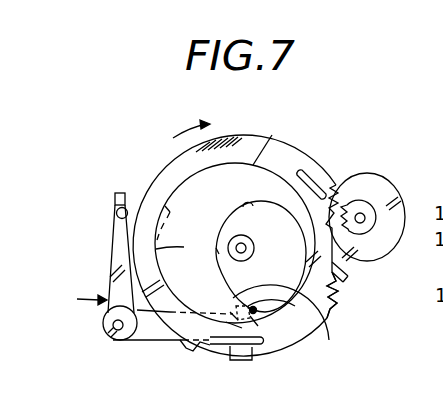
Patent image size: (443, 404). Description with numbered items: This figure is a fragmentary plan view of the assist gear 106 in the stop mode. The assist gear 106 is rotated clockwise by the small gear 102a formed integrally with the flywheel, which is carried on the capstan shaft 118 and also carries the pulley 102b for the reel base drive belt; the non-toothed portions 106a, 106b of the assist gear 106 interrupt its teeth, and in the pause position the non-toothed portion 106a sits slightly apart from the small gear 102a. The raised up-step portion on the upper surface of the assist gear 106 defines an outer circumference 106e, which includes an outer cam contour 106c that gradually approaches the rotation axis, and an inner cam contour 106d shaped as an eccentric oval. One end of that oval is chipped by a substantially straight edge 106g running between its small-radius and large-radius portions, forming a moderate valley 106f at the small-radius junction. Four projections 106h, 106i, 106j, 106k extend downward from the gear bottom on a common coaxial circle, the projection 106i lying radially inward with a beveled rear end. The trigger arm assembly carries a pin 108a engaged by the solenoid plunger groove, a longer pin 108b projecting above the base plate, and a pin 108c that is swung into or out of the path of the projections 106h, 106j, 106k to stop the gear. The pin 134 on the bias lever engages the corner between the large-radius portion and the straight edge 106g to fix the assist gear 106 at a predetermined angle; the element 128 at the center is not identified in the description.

The assist gear 106 is at (309, 158).
The non-toothed portion 106a is at (346, 279).
The non-toothed portion 106b is at (210, 344).
The outer cam contour 106c is at (279, 137).
The inner cam contour 106d is at (243, 208).
The outer circumference 106e is at (156, 249).
The moderate valley 106f is at (216, 251).
The straight edge 106g is at (234, 293).
The projection 106h is at (268, 331).
The projection 106i is at (334, 306).
The projection 106j is at (165, 208).
The projection 106k is at (207, 313).
The pin 108a is at (116, 194).
The pin 108b is at (117, 213).
The pin 108c is at (253, 346).
The small gear 102a is at (349, 201).
The pulley 102b is at (364, 214).
The capstan shaft 118 is at (380, 248).
The shaft 128 is at (230, 241).
The pin 134 is at (258, 318).